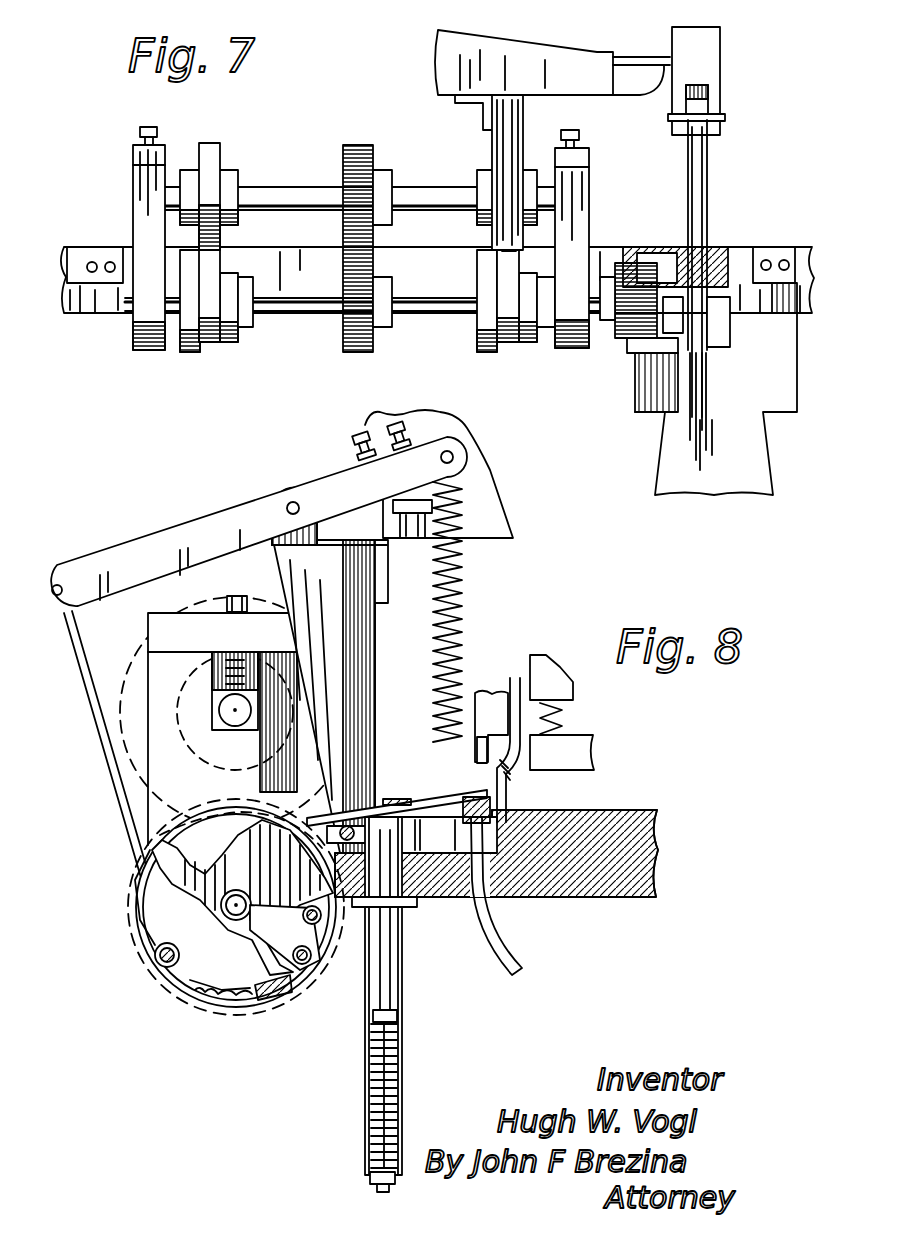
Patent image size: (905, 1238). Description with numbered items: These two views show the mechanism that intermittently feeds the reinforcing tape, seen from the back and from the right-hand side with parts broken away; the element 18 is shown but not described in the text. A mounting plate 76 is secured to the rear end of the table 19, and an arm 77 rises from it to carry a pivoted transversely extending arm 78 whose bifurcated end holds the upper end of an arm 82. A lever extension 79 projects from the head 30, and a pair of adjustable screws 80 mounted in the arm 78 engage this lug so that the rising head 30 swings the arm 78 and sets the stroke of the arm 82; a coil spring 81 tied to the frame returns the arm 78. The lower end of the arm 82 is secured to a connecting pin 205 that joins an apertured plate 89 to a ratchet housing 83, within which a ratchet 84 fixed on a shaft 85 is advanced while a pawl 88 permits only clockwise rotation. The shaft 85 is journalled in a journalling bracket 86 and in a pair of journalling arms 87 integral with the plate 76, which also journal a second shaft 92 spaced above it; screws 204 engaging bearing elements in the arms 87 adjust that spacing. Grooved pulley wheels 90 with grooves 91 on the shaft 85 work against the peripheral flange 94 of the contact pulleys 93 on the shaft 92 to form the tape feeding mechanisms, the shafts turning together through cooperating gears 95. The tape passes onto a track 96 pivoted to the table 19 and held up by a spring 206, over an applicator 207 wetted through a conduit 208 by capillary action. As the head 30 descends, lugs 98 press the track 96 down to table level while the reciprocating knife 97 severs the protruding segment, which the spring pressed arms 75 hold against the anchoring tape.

In FIG. 7, the support plate 18 is at (695, 441).
In FIG. 7, the table 19 is at (108, 302).
In FIG. 8, the table 19 is at (640, 841).
In FIG. 7, the head 30 is at (530, 52).
In FIG. 8, the head 30 is at (482, 452).
In FIG. 8, the spring pressed arms 75 is at (594, 751).
In FIG. 7, the mounting plate 76 is at (122, 236).
In FIG. 7, the arm 77 is at (706, 209).
In FIG. 8, the arm 77 is at (292, 501).
In FIG. 7, the transversely extending arm 78 is at (720, 63).
In FIG. 8, the transversely extending arm 78 is at (145, 548).
In FIG. 7, the lever extension 79 is at (666, 58).
In FIG. 8, the lever extension 79 is at (414, 540).
In FIG. 8, the adjustable screws 80 is at (375, 430).
In FIG. 8, the coil spring 81 is at (463, 600).
In FIG. 7, the arm 82 is at (708, 166).
In FIG. 8, the arm 82 is at (106, 766).
In FIG. 8, the ratchet housing 83 is at (313, 961).
In FIG. 8, the ratchet 84 is at (166, 904).
In FIG. 7, the shaft 85 is at (438, 302).
In FIG. 8, the shaft 85 is at (235, 921).
In FIG. 7, the journalling bracket 86 is at (743, 322).
In FIG. 8, the journalling bracket 86 is at (268, 862).
In FIG. 7, the journalling arms 87 is at (150, 350).
In FIG. 8, the journalling arms 87 is at (157, 803).
In FIG. 8, the pawl 88 is at (285, 996).
In FIG. 7, the apertured plate 89 is at (712, 355).
In FIG. 8, the apertured plate 89 is at (242, 830).
In FIG. 7, the grooved pulley wheels 90 is at (232, 345).
In FIG. 8, the grooved pulley wheels 90 is at (214, 1007).
In FIG. 7, the grooves 91 is at (212, 352).
In FIG. 8, the grooves 91 is at (226, 812).
In FIG. 7, the second shaft 92 is at (268, 196).
In FIG. 8, the second shaft 92 is at (234, 722).
In FIG. 7, the contact pulleys 93 is at (228, 172).
In FIG. 7, the peripheral flange 94 is at (208, 143).
In FIG. 8, the peripheral flange 94 is at (146, 652).
In FIG. 7, the gears 95 is at (353, 146).
In FIG. 8, the track 96 is at (420, 806).
In FIG. 7, the reciprocating knife 97 is at (519, 222).
In FIG. 8, the reciprocating knife 97 is at (507, 796).
In FIG. 8, the lugs 98 is at (477, 752).
In FIG. 7, the screws 204 is at (145, 130).
In FIG. 8, the screws 204 is at (222, 598).
In FIG. 7, the connecting pin 205 is at (680, 398).
In FIG. 8, the connecting pin 205 is at (158, 966).
In FIG. 8, the spring 206 is at (404, 1046).
In FIG. 8, the applicator 207 is at (476, 800).
In FIG. 8, the conduit 208 is at (500, 921).